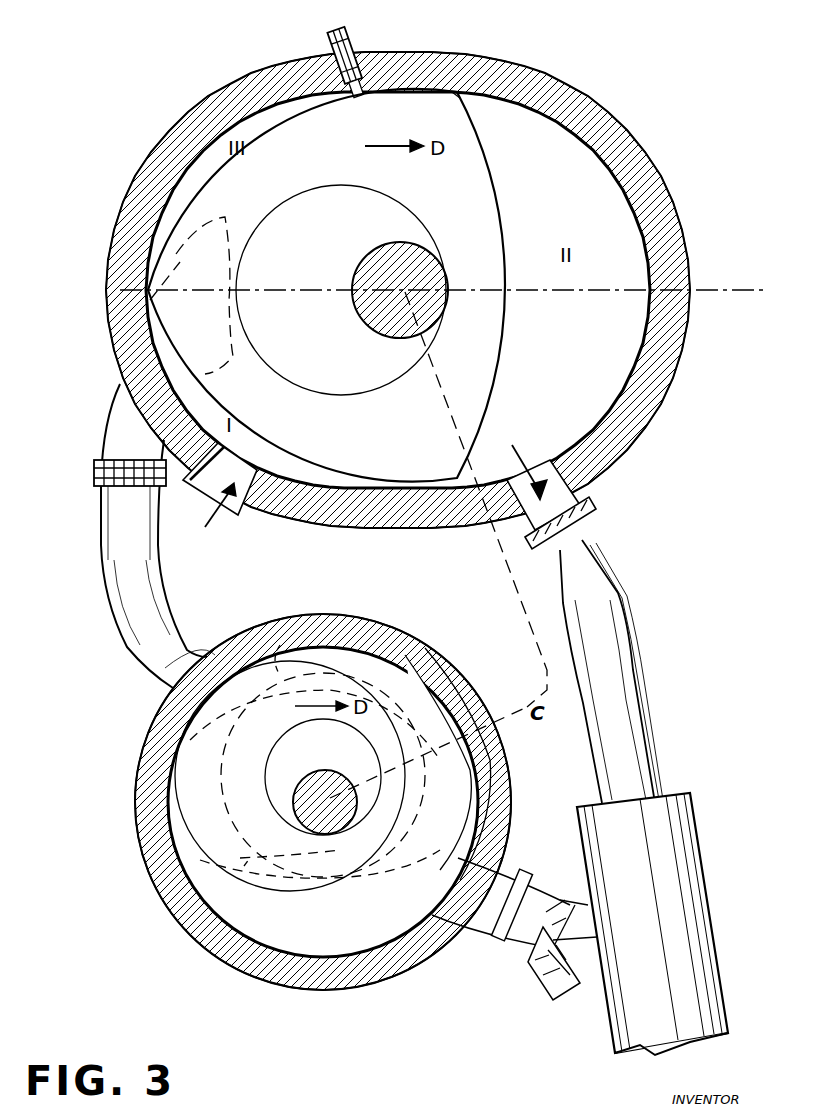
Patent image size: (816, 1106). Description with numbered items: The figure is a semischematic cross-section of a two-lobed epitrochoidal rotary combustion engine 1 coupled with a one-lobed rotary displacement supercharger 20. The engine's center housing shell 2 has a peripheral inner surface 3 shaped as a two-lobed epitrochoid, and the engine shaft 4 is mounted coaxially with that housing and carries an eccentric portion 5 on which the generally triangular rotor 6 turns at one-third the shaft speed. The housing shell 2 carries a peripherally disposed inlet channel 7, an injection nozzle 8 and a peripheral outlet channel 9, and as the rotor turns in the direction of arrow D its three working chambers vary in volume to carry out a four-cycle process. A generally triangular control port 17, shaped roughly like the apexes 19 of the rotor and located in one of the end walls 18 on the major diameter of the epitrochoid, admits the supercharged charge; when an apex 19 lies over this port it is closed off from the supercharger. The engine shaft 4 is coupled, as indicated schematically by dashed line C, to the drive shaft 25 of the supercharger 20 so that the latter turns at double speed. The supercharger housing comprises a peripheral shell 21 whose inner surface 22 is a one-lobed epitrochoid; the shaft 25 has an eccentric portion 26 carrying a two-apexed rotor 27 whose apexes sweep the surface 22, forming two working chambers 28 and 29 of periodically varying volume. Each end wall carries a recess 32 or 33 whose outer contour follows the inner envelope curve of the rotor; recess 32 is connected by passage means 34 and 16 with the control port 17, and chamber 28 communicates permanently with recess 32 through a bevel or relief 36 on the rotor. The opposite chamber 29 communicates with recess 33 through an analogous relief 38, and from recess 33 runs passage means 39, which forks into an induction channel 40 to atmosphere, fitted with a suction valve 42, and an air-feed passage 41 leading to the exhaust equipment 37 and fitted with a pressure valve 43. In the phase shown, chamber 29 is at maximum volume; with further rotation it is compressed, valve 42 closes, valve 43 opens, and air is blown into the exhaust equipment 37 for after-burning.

The rotary combustion engine 1 is at (605, 92).
The center housing shell 2 is at (640, 150).
The peripheral inner surface 3 is at (612, 160).
The engine shaft 4 is at (325, 1036).
The eccentric portion 5 is at (341, 290).
The rotor 6 is at (326, 285).
The inlet channel 7 is at (219, 515).
The injection nozzle 8 is at (356, 50).
The peripheral outlet channel 9 is at (540, 470).
The transfer passage means 16 is at (110, 406).
The control port 17 is at (217, 295).
The end wall 18 is at (569, 323).
The apex 19 is at (470, 106).
The rotary displacement supercharger 20 is at (454, 664).
The peripheral shell 21 is at (344, 626).
The inner surface 22 is at (240, 918).
The drive shaft 25 is at (325, 802).
The eccentric portion 26 is at (323, 777).
The two-apexed rotor 27 is at (190, 792).
The working chamber 28 is at (272, 645).
The working chamber 29 is at (292, 929).
The recess 32 is at (244, 866).
The recess 33 is at (247, 862).
The passage means 34 is at (165, 662).
The relief 36 is at (398, 642).
The exhaust equipment 37 is at (698, 840).
The relief 38 is at (298, 880).
The passage means 39 is at (482, 868).
The induction channel 40 is at (560, 995).
The air-feed passage 41 is at (585, 905).
The suction valve 42 is at (545, 962).
The pressure valve 43 is at (565, 938).